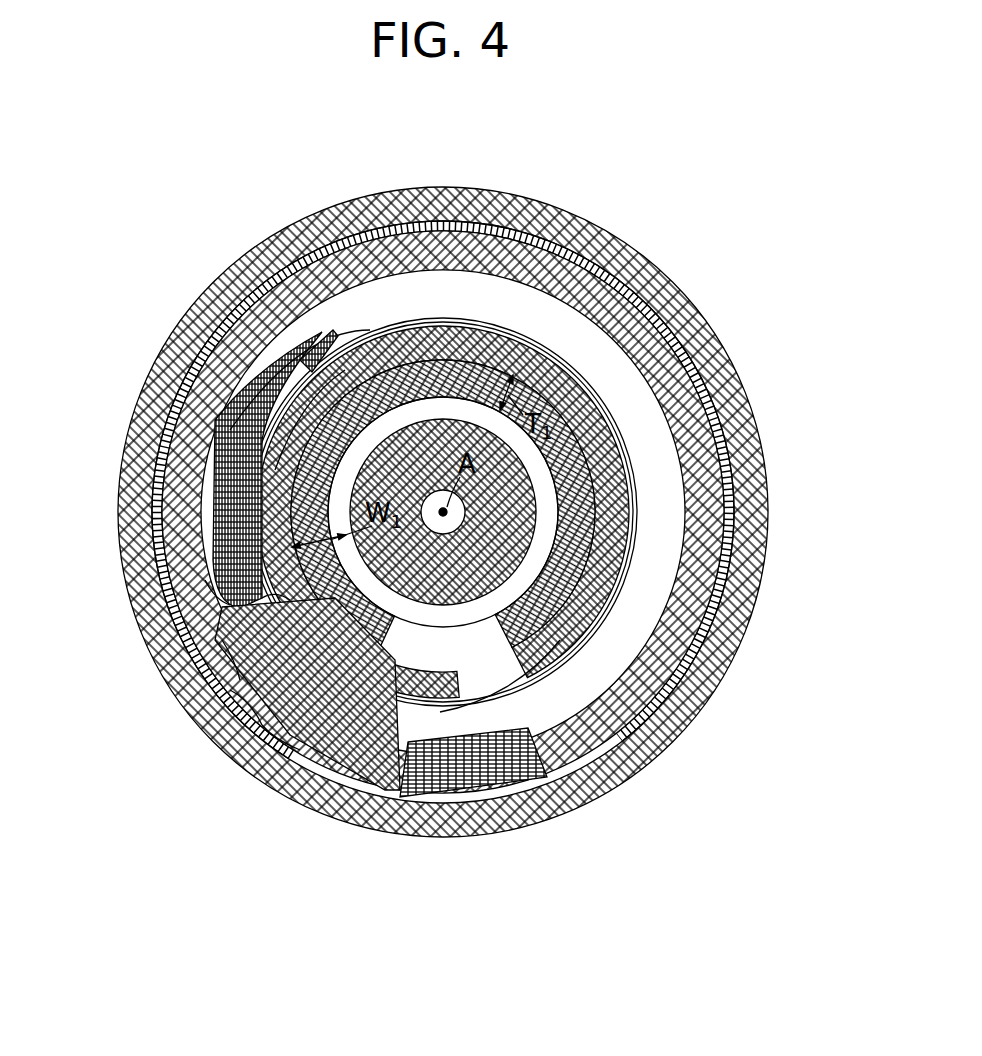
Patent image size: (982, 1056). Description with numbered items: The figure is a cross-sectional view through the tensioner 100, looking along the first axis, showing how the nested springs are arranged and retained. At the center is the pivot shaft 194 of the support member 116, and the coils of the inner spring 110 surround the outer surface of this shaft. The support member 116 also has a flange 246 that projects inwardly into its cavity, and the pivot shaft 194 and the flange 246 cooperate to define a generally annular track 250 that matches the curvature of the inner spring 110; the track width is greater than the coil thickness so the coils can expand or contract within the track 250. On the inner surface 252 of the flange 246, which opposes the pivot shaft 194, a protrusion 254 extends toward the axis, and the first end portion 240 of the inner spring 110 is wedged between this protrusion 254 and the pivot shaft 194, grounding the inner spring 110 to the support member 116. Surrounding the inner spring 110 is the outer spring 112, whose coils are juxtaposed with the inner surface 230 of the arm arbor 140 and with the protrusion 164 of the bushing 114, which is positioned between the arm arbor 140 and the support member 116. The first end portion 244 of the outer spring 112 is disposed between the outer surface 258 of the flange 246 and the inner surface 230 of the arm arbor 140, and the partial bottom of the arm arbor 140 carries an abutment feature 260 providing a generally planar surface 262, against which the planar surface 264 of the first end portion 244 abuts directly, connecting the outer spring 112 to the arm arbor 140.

The tensioner 100 is at (603, 68).
The inner spring 110 is at (605, 468).
The outer spring 112 is at (222, 600).
The bushing 114 is at (600, 277).
The support member 116 is at (523, 195).
The arm arbor 140 is at (657, 357).
The protrusion 164 is at (498, 775).
The pivot shaft 194 is at (500, 548).
The inner surface 230 is at (200, 460).
The first end portion 240 is at (312, 745).
The first end portion 244 is at (265, 600).
The flange 246 is at (590, 617).
The track 250 is at (333, 477).
The inner surface 252 is at (378, 700).
The protrusion 254 is at (262, 725).
The outer surface 258 is at (318, 390).
The abutment feature 260 is at (230, 690).
The planar surface 262 is at (228, 650).
The planar surface 264 is at (290, 547).